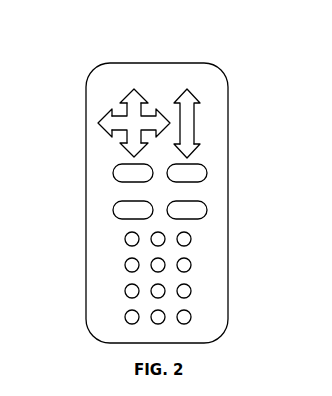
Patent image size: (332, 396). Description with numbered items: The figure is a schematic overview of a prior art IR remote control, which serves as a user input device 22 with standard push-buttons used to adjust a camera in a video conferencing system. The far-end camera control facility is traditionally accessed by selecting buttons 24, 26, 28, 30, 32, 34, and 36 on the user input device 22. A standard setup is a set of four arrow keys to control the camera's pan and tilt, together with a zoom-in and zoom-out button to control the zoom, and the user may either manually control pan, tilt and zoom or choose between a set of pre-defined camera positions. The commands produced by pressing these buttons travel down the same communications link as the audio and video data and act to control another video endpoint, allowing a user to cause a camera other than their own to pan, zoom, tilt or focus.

The user input device 22 is at (221, 52).
The button 24 is at (160, 120).
The button 26 is at (123, 148).
The button 28 is at (98, 123).
The button 30 is at (121, 103).
The button 32 is at (192, 254).
The button 34 is at (199, 101).
The button 36 is at (198, 150).